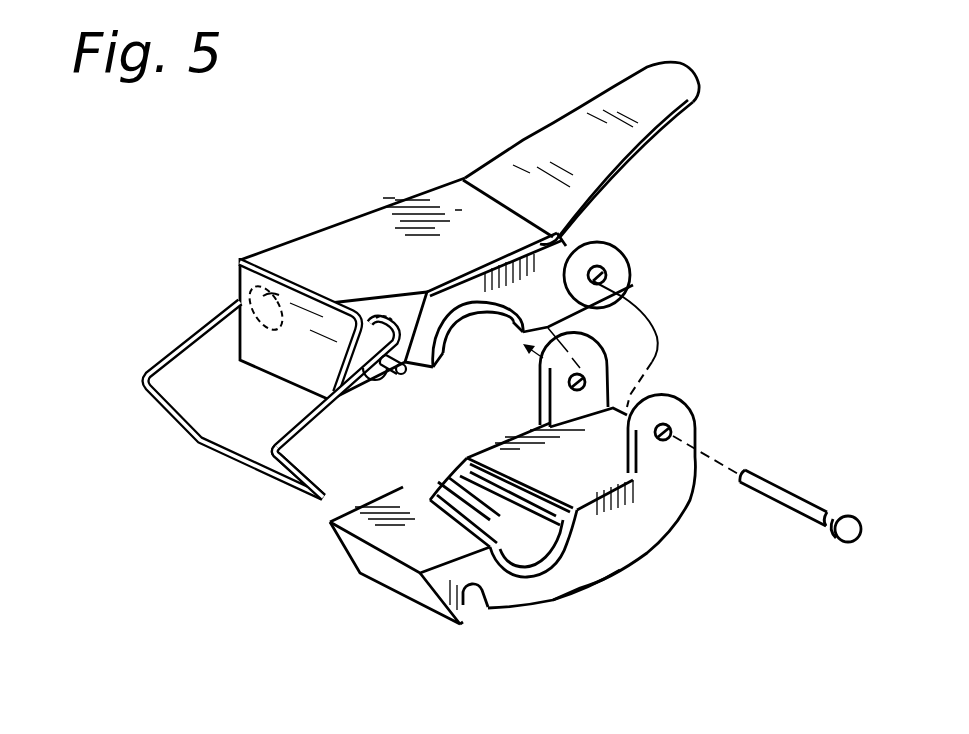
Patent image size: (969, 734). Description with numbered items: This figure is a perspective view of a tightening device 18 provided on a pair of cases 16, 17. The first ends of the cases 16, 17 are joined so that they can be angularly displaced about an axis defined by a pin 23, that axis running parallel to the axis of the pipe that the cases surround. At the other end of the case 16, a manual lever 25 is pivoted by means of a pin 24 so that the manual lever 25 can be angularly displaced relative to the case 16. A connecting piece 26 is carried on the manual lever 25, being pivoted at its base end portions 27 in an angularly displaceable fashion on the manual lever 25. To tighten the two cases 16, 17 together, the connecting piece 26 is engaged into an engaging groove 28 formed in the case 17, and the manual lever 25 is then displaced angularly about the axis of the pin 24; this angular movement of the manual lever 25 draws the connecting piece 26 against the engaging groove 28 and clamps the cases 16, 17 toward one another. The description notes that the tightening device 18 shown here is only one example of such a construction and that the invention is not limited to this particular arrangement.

The case 16 is at (548, 270).
The case 17 is at (620, 540).
The tightening device 18 is at (144, 313).
The pin 23 is at (793, 493).
The pin 24 is at (383, 378).
The manual lever 25 is at (676, 78).
The connecting piece 26 is at (305, 465).
The base end portions 27 is at (237, 288).
The engaging groove 28 is at (472, 602).